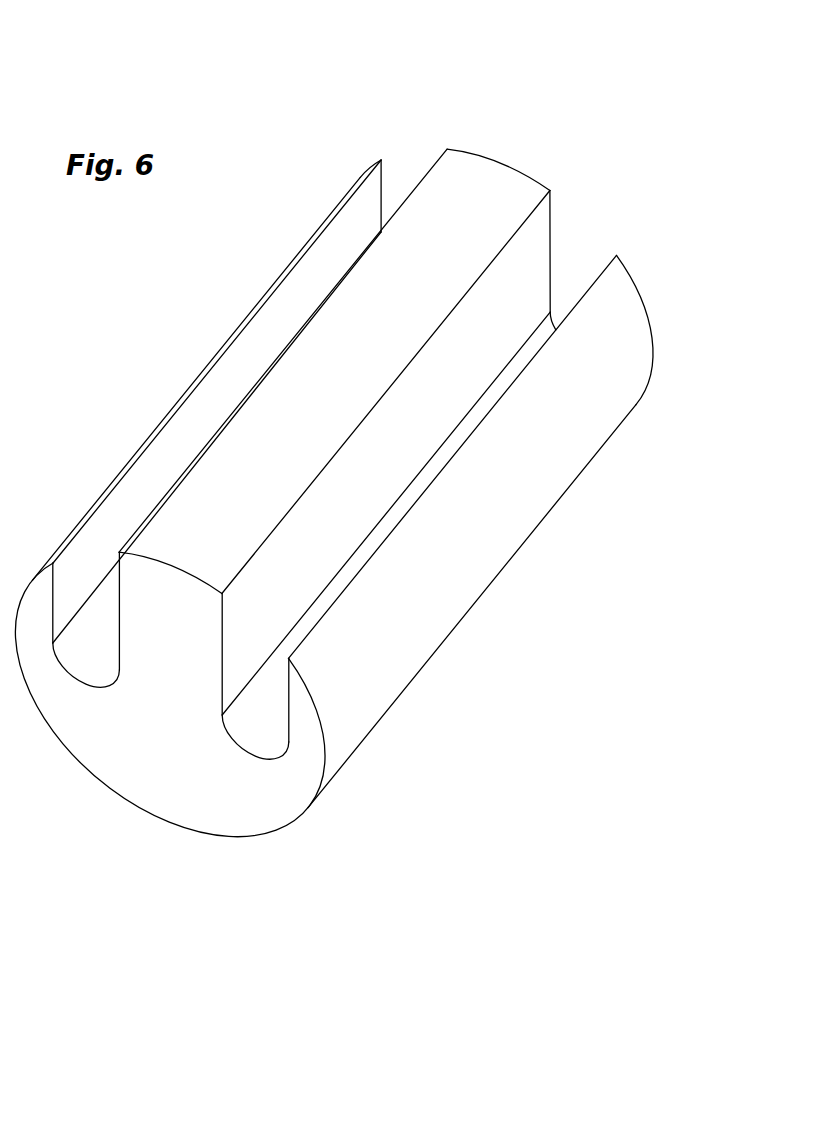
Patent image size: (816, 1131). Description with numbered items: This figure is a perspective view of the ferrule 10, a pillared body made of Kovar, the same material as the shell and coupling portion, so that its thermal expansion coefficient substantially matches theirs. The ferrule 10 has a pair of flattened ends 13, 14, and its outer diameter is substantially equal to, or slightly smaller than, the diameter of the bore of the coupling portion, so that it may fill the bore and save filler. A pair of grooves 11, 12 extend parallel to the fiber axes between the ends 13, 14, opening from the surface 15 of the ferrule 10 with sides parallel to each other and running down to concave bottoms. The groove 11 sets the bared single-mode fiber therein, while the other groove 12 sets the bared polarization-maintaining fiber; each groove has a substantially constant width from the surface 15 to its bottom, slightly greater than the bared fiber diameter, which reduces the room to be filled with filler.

The ferrule 10 is at (334, 480).
The groove 11 is at (308, 554).
The groove 12 is at (93, 551).
The end 13 is at (160, 767).
The end 14 is at (553, 218).
The surface 15 is at (278, 430).